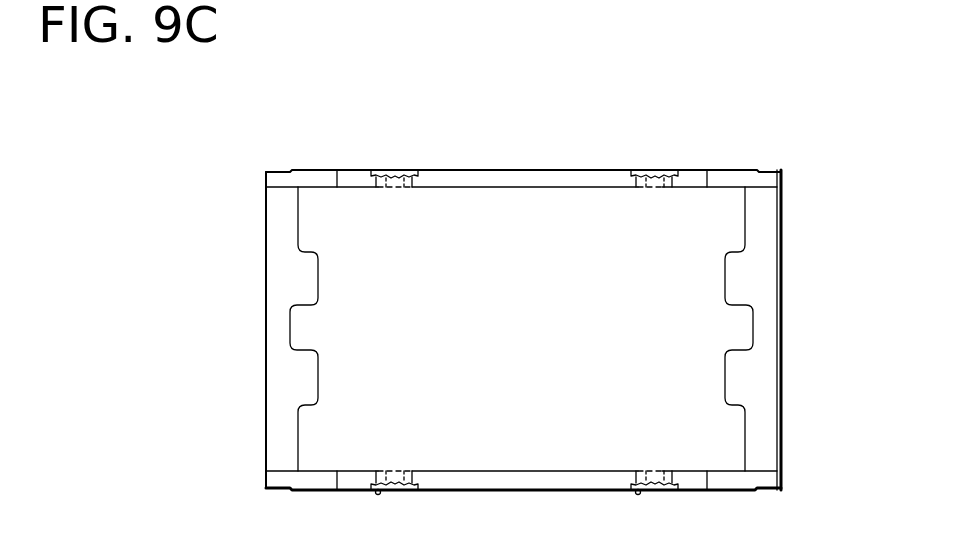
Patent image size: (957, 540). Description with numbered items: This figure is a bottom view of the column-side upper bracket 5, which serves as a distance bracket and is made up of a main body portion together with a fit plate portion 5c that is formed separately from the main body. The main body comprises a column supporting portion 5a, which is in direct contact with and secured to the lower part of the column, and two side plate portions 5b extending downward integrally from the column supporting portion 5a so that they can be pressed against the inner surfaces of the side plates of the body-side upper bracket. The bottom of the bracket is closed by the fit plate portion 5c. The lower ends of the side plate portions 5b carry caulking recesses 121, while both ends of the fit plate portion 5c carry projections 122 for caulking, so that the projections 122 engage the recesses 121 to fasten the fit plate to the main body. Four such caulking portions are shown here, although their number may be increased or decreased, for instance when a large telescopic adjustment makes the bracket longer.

The column-side upper bracket 5 is at (796, 296).
The column supporting portion 5a is at (782, 436).
The side plate portion 5b is at (522, 170).
The fit plate portion 5c is at (726, 378).
The caulking recess 121 is at (377, 172).
The projection for caulking 122 is at (395, 173).